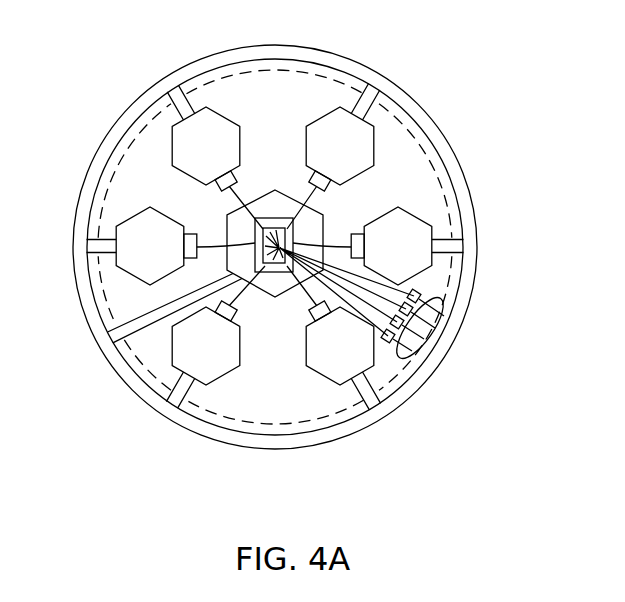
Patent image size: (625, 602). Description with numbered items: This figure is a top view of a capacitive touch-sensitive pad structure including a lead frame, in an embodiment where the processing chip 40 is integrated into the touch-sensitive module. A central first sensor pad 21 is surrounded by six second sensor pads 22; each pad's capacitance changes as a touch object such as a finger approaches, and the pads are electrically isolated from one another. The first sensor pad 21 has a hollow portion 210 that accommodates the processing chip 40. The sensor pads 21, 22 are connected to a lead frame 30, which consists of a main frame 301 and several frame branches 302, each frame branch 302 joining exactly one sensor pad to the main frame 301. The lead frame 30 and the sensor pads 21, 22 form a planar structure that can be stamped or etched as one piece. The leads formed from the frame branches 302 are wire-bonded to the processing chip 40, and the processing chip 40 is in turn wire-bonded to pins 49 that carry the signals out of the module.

The first sensor pad 21 is at (249, 272).
The second sensor pads 22 is at (275, 247).
The lead frame 30 is at (335, 247).
The main frame 301 is at (432, 131).
The frame branches 302 is at (447, 248).
The processing chip 40 is at (263, 238).
The pins 49 is at (408, 362).
The hollow portion 210 is at (275, 265).